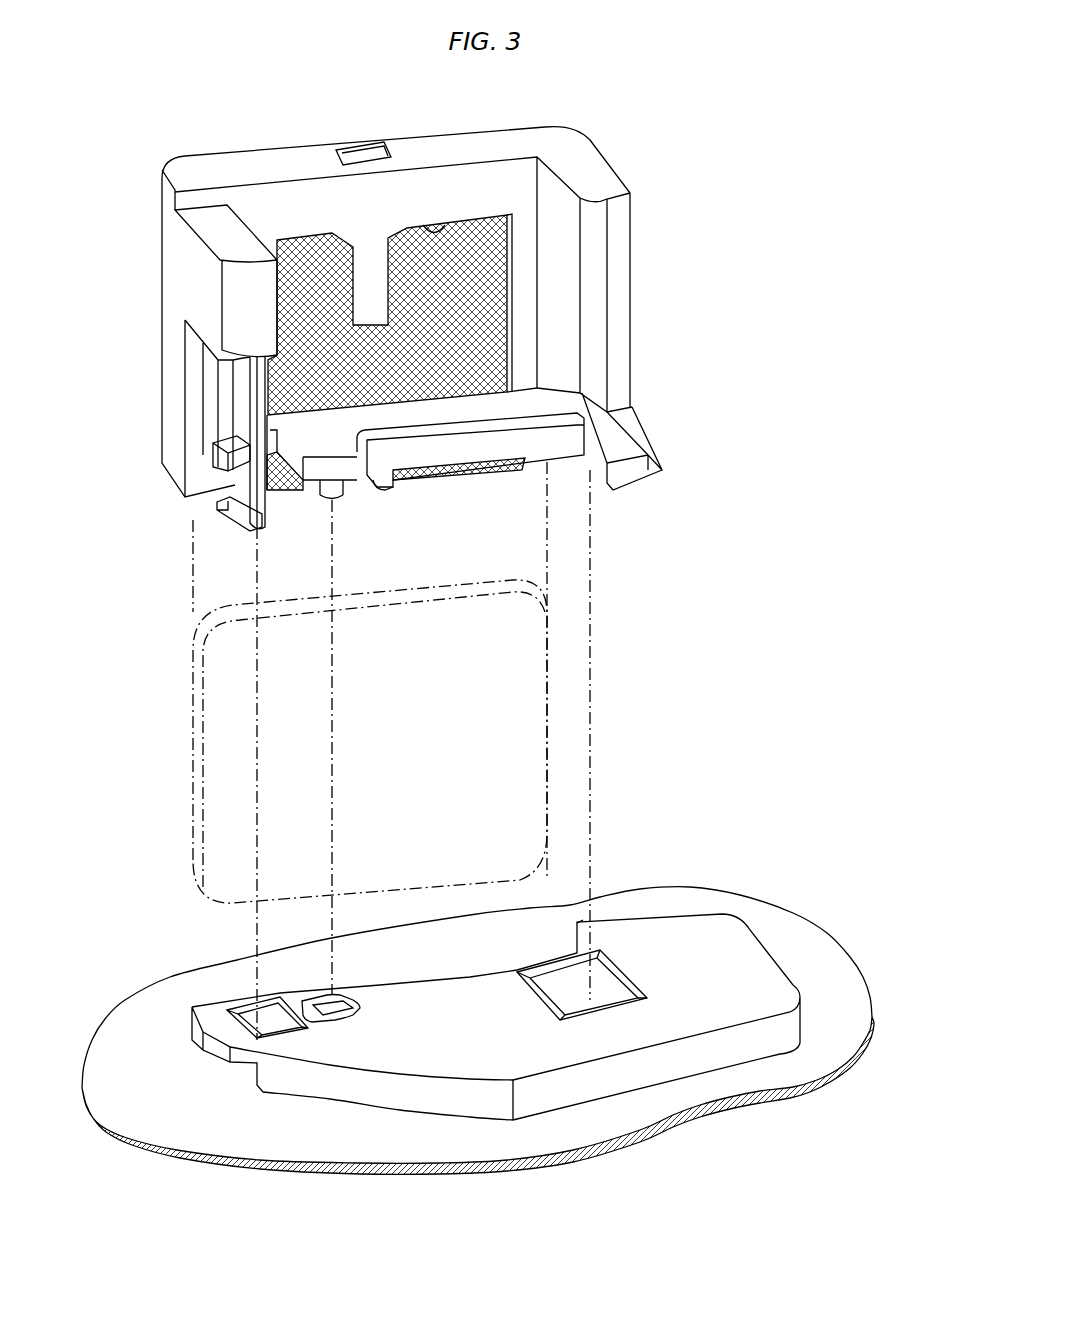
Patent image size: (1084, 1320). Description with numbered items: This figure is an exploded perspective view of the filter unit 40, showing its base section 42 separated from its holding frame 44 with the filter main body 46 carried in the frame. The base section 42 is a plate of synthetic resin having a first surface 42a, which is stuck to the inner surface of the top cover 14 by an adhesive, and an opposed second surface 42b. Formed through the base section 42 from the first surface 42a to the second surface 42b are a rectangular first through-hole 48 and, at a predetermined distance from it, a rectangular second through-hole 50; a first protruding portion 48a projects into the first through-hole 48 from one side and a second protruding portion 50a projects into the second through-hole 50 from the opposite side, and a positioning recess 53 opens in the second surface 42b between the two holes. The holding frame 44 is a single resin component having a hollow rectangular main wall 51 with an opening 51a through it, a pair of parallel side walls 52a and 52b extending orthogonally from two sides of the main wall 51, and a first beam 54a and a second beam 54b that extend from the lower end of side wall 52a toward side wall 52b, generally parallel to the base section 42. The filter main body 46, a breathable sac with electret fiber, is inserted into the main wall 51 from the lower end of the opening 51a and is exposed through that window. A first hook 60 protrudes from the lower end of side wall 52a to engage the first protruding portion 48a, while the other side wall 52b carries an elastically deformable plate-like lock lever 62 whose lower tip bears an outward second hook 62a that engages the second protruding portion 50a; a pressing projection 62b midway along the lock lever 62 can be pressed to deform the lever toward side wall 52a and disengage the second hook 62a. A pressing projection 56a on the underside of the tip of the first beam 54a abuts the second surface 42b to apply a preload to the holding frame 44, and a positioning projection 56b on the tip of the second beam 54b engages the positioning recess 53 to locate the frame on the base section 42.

The top cover 14 is at (783, 1070).
The filter unit 40 is at (726, 617).
The base section 42 is at (737, 942).
The first surface 42a is at (446, 1114).
The second surface 42b is at (425, 1060).
The holding frame 44 is at (640, 262).
The filter main body 46 is at (487, 232).
The first through-hole 48 is at (552, 987).
The first protruding portion 48a is at (623, 995).
The second through-hole 50 is at (293, 1032).
The second protruding portion 50a is at (248, 1006).
The main wall 51 is at (301, 196).
The opening 51a is at (433, 230).
The side wall 52a is at (601, 182).
The side wall 52b is at (192, 271).
The positioning recess 53 is at (345, 1008).
The first beam 54a is at (447, 440).
The second beam 54b is at (322, 452).
The pressing projection 56a is at (384, 484).
The positioning projection 56b is at (338, 497).
The first hook 60 is at (632, 488).
The lock lever 62 is at (242, 388).
The second hook 62a is at (222, 510).
The pressing projection 62b is at (221, 438).